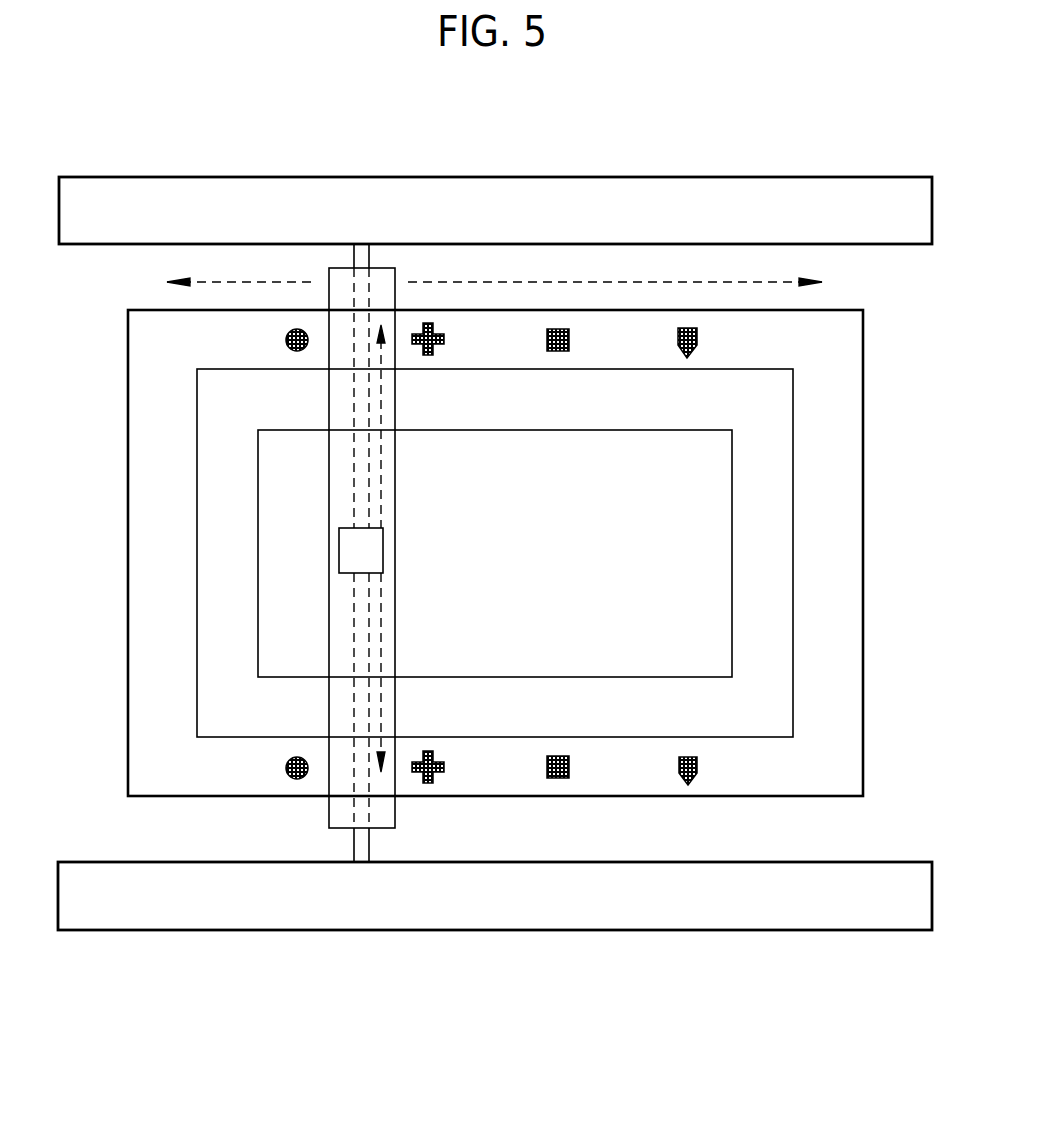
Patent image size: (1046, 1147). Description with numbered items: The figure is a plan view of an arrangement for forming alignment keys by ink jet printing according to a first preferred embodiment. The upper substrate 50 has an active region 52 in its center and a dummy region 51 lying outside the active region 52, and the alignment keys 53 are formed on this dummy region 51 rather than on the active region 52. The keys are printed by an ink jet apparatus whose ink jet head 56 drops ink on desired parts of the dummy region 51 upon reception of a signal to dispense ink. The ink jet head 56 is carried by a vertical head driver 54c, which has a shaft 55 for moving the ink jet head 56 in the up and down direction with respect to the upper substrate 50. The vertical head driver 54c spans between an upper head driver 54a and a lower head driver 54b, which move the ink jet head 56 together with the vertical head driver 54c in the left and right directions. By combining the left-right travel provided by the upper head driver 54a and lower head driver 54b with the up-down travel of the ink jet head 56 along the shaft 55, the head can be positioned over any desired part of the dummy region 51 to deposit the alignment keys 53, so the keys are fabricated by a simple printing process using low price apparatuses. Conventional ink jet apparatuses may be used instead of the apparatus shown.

The upper substrate 50 is at (863, 667).
The dummy region 51 is at (822, 531).
The active region 52 is at (732, 472).
The alignment keys 53 is at (308, 344).
The upper head driver 54a is at (883, 185).
The lower head driver 54b is at (883, 920).
The vertical head driver 54c is at (329, 460).
The shaft 55 is at (366, 843).
The ink jet head 56 is at (339, 553).